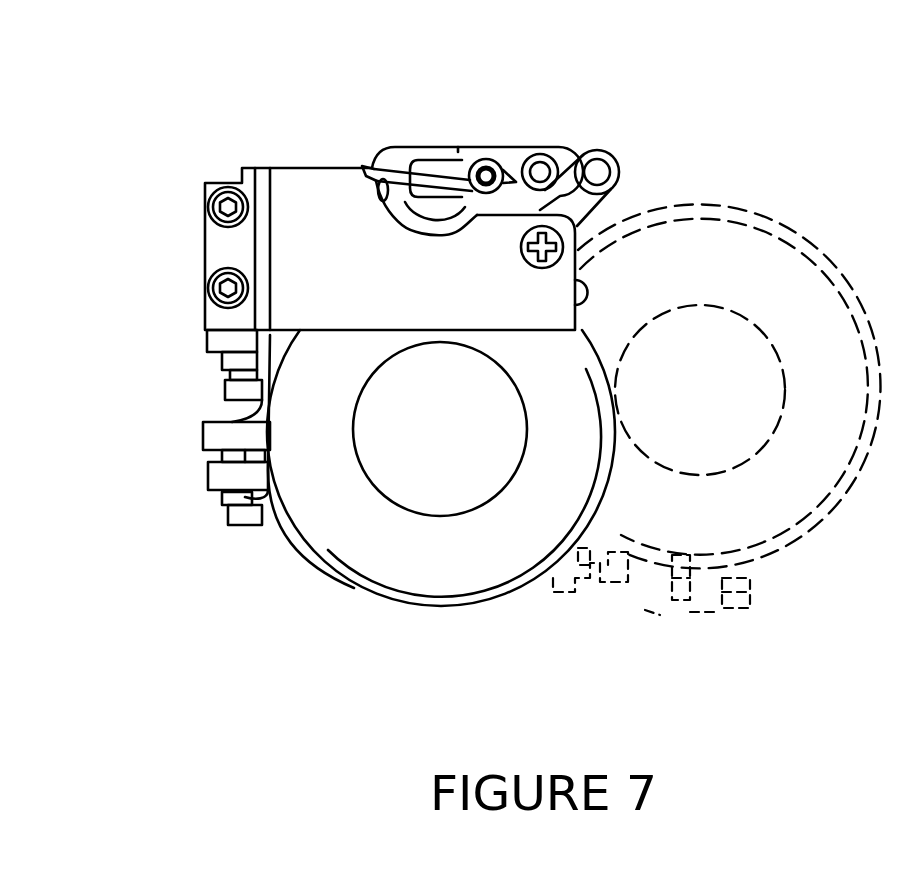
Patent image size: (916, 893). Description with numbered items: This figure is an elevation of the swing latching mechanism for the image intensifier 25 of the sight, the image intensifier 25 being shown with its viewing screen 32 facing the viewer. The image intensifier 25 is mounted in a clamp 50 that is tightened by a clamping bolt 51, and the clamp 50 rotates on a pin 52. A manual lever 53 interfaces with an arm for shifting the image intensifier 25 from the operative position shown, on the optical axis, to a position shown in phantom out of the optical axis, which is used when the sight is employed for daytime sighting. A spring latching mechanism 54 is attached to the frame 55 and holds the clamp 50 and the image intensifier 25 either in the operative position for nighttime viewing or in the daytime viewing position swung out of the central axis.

The image intensifier 25 is at (502, 533).
The viewing screen 32 is at (452, 462).
The clamp 50 is at (353, 587).
The clamping bolt 51 is at (228, 525).
The pin 52 is at (580, 230).
The manual lever 53 is at (610, 153).
The spring latching mechanism 54 is at (394, 137).
The frame 55 is at (327, 217).